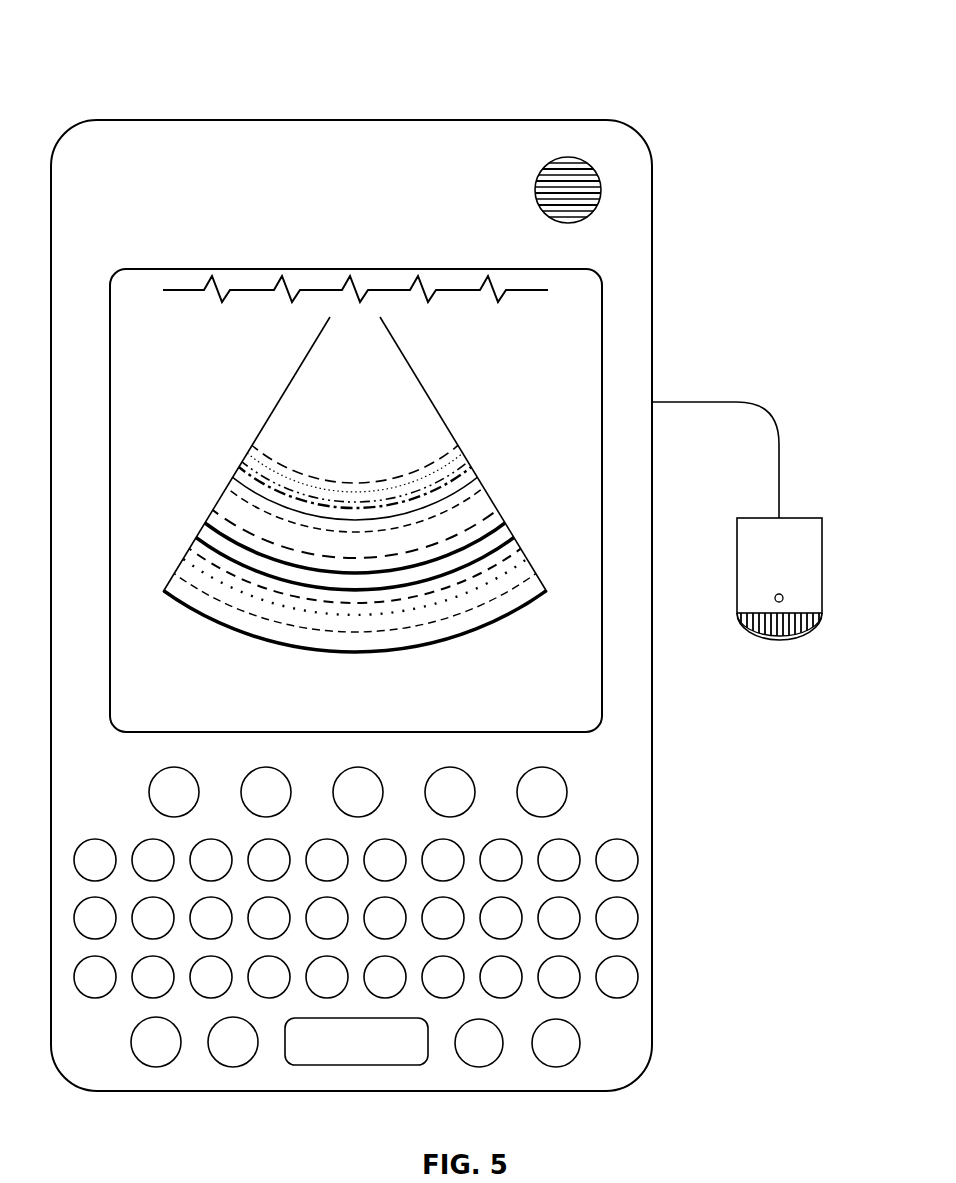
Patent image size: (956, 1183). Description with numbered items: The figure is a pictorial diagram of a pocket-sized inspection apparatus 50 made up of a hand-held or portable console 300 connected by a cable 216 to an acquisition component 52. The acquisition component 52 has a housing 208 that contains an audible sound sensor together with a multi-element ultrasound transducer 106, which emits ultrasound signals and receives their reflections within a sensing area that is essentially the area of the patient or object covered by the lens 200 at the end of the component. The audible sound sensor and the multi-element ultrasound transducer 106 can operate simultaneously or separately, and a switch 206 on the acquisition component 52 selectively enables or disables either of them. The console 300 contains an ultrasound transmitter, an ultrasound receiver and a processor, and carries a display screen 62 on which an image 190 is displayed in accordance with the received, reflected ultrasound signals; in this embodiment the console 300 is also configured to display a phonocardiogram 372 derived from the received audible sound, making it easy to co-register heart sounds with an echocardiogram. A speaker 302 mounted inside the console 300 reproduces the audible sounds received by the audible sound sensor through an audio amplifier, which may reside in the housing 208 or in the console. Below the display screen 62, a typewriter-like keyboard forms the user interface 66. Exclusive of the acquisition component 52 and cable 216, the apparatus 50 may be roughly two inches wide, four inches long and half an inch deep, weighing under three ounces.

The pocket-sized inspection apparatus 50 is at (102, 42).
The hand-held console 300 is at (70, 122).
The speaker 302 is at (568, 157).
The display screen 62 is at (603, 317).
The phonocardiogram 372 is at (256, 290).
The image 190 is at (248, 456).
The user interface 66 is at (668, 683).
The cable 216 is at (692, 401).
The acquisition component 52 is at (810, 590).
The housing 208 is at (822, 590).
The switch 206 is at (784, 598).
The lens 200 is at (778, 641).
The multi-element ultrasound transducer 106 is at (796, 638).